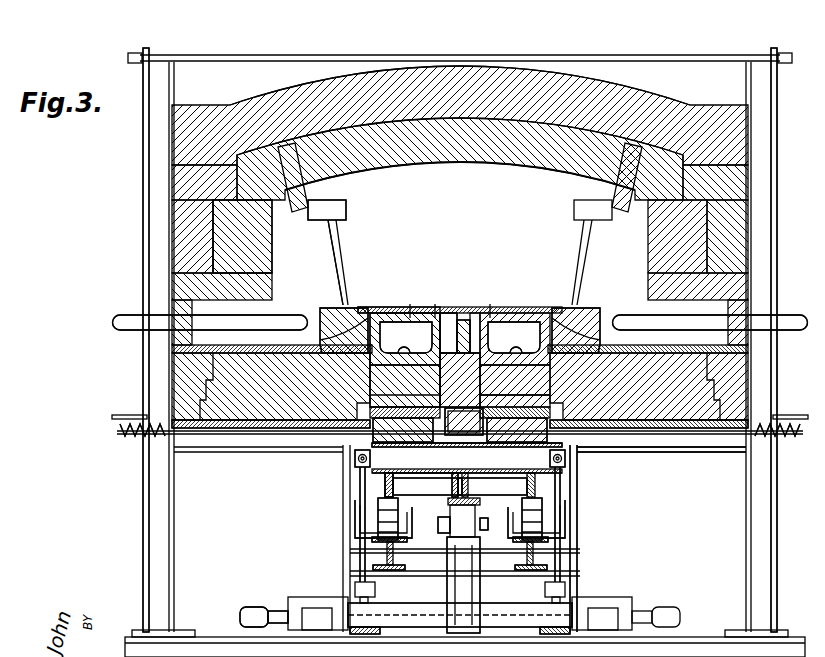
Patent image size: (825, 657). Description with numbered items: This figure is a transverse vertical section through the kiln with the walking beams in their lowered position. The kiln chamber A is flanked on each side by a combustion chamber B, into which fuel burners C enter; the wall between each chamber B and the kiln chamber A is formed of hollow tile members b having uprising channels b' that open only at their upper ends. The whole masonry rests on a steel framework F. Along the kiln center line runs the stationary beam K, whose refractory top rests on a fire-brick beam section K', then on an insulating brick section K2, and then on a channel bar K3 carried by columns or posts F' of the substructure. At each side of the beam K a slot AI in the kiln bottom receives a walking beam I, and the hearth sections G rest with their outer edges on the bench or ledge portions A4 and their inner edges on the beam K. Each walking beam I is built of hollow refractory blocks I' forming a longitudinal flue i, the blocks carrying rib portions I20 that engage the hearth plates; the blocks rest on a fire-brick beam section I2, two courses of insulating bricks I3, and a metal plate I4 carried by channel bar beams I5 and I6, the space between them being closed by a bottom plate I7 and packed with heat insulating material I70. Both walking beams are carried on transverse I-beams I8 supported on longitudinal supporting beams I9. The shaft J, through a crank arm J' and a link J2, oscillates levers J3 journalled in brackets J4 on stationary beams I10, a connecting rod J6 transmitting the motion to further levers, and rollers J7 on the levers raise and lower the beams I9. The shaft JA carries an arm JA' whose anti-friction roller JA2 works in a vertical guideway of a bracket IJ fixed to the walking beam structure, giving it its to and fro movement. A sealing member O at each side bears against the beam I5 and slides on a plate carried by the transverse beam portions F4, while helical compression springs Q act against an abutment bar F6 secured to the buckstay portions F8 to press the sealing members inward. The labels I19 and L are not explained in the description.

The kiln chamber A is at (452, 170).
The hollow tile member b is at (434, 210).
The uprising channel b' is at (450, 262).
The combustion chamber B is at (422, 236).
The kiln bench or ledge portion A4 is at (565, 308).
The hollow block I' is at (424, 294).
The walking beam I is at (478, 338).
The rod I19 is at (410, 304).
The longitudinal rib portion I20 is at (490, 304).
The hearth section G is at (447, 313).
The slot AI is at (575, 330).
The stationary beam K is at (472, 309).
The lip L is at (522, 292).
The fuel burner C is at (791, 313).
The flue or channel i is at (460, 337).
The beam section I2 is at (560, 380).
The beam section K' is at (460, 380).
The insulating brick section K2 is at (464, 421).
The insulating brick I3 is at (560, 398).
The buckstay portion F8 is at (150, 475).
The abutment bar F6 is at (122, 431).
The helical compression spring Q is at (793, 433).
The sealing member O is at (570, 428).
The metal plate I4 is at (370, 446).
The connecting rod J6 is at (566, 458).
The longitudinal channel bar beam I5 is at (460, 440).
The longitudinal channel bar beam I6 is at (449, 460).
The channel bar K3 is at (463, 472).
The steel framework F is at (603, 538).
The transverse beam portion F4 is at (677, 447).
The longitudinal supporting beam I9 is at (535, 484).
The lever J3 is at (542, 512).
The heat insulating material I70 is at (393, 480).
The bottom metal plate I7 is at (427, 486).
The transverse I-beam I8 is at (492, 486).
The column or post F' is at (487, 557).
The bracket J4 is at (565, 522).
The guideway bracket IJ is at (444, 517).
The anti-friction roller JA2 is at (489, 515).
The roller J7 is at (548, 540).
The shaft JA is at (282, 593).
The shaft J is at (254, 594).
The link J2 is at (561, 578).
The stationary beam I10 is at (540, 571).
The arm JA' is at (460, 603).
The crank arm J' is at (460, 640).